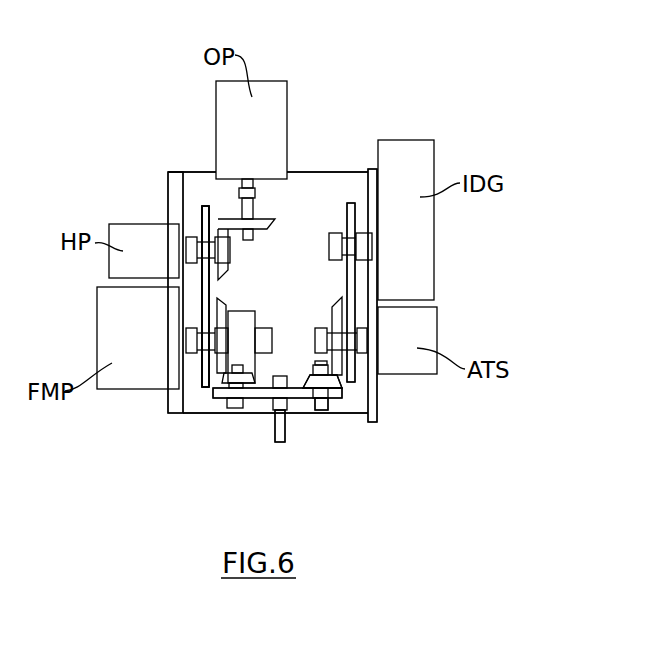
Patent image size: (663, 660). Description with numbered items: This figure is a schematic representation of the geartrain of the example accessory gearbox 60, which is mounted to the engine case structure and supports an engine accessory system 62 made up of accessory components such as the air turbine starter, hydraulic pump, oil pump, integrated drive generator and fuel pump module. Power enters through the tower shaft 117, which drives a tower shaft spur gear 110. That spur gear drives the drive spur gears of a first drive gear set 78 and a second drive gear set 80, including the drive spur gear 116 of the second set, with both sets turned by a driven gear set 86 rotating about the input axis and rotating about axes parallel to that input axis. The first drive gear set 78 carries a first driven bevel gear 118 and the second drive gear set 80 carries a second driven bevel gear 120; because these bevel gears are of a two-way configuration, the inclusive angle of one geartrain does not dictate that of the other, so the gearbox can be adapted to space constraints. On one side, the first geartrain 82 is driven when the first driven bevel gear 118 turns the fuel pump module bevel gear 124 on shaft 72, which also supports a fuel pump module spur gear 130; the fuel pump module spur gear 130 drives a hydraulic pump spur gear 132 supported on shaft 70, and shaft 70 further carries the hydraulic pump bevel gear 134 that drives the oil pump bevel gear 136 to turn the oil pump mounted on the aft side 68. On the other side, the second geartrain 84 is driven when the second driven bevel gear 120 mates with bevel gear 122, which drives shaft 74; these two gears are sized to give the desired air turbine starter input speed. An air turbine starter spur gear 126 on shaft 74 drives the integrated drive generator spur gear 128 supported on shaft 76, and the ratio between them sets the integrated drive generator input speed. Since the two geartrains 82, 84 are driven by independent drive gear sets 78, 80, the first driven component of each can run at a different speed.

The accessory gearbox 60 is at (326, 182).
The engine accessory system 62 is at (479, 94).
The aft side 68 is at (310, 155).
The shaft 70 is at (213, 251).
The shaft 72 is at (213, 340).
The shaft 74 is at (322, 337).
The shaft 76 is at (332, 247).
The first drive gear set 78 is at (220, 438).
The second drive gear set 80 is at (340, 422).
The first geartrain 82 is at (204, 170).
The second geartrain 84 is at (361, 165).
The driven gear set 86 is at (264, 447).
The tower shaft spur gear 110 is at (262, 392).
The drive spur gear 116 is at (333, 395).
The tower shaft 117 is at (283, 432).
The first driven bevel gear 118 is at (203, 378).
The second driven bevel gear 120 is at (353, 378).
The bevel gear 122 is at (333, 364).
The FPM bevel gear 124 is at (222, 360).
The ATS spur gear 126 is at (351, 316).
The IDG spur gear 128 is at (352, 277).
The FPM spur gear 130 is at (202, 313).
The HP spur gear 132 is at (207, 277).
The HP bevel gear 134 is at (228, 233).
The OP bevel gear 136 is at (237, 223).